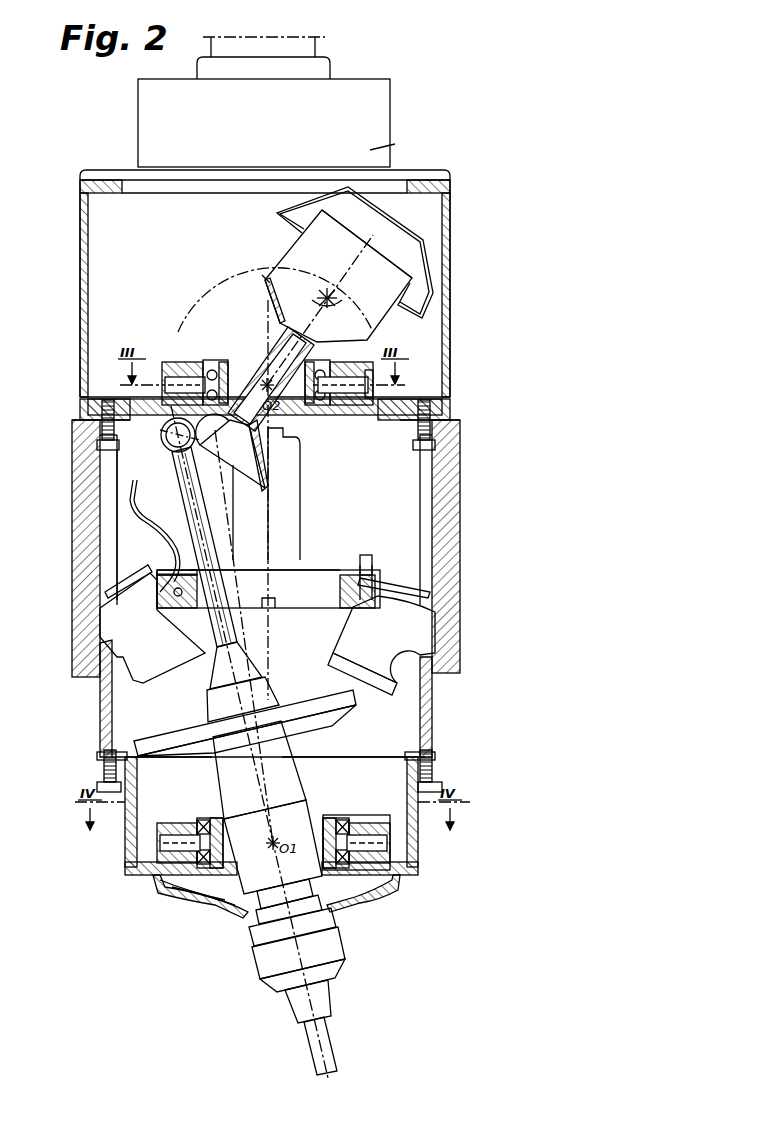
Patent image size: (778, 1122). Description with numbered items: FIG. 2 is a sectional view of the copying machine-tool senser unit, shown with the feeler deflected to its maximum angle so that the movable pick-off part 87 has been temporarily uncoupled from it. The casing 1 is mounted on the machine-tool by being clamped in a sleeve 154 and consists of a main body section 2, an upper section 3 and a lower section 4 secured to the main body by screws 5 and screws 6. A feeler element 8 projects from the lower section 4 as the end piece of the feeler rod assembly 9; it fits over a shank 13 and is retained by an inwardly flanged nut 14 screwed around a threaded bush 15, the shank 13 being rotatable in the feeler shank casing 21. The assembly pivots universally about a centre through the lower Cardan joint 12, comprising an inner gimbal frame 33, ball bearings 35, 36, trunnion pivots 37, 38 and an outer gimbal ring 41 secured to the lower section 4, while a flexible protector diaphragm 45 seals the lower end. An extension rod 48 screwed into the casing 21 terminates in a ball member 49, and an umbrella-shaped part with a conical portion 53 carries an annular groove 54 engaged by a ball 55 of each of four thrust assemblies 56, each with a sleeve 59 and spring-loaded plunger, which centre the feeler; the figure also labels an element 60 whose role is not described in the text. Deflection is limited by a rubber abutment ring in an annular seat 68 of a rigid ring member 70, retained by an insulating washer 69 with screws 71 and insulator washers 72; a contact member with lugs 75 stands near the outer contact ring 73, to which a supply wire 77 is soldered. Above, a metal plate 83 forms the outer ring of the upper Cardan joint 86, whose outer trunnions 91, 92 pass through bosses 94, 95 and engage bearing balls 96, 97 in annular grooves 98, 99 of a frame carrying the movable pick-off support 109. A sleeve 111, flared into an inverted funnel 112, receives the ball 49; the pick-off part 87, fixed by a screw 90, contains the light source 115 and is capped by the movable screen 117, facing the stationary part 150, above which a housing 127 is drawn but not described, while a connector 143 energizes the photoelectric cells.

The casing 1 is at (455, 383).
The main body section 2 is at (440, 706).
The upper section 3 is at (450, 272).
The lower section 4 is at (125, 830).
The screws 5 is at (97, 445).
The screws 6 is at (100, 782).
The feeler element 8 is at (325, 1045).
The feeler rod assembly 9 is at (292, 745).
The lower universal mounting or Cardan joint 12 is at (338, 812).
The shank 13 is at (320, 906).
The inwardly flanged nut 14 is at (268, 960).
The externally threaded bush 15 is at (252, 937).
The feeler shank casing 21 is at (290, 783).
The inner gimbal frame 33 is at (205, 898).
The ball bearing 35 is at (190, 895).
The ball bearing 36 is at (380, 812).
The trunnion pivot 37 is at (165, 845).
The trunnion pivot 38 is at (372, 898).
The outer gimbal frame or ring 41 is at (170, 823).
The flexible protector diaphragm 45 is at (212, 915).
The extension rod 48 is at (255, 628).
The ball member 49 is at (172, 445).
The conical portion 53 is at (350, 688).
The annular groove 54 is at (150, 728).
The ball 55 is at (200, 690).
The thrust assemblies 56 is at (135, 635).
The sleeve 59 is at (125, 685).
The wall 60 is at (108, 530).
The annular seat 68 is at (180, 595).
The washer 69 is at (380, 590).
The rigid ring member 70 is at (360, 600).
The screws 71 is at (362, 565).
The insulator washers 72 is at (375, 565).
The outer contact ring 73 is at (372, 565).
The lugs 75 is at (180, 597).
The supply wire 77 is at (130, 498).
The metal plate 83 is at (95, 408).
The upper Cardan joint 86 is at (372, 402).
The pick-off part 87 is at (252, 262).
The screw 90 is at (272, 340).
The outer trunnion 91 is at (175, 372).
The outer trunnion 92 is at (345, 405).
The boss 94 is at (182, 375).
The boss 95 is at (355, 370).
The bearing balls 96 is at (212, 370).
The bearing balls 97 is at (312, 405).
The annular groove 98 is at (225, 370).
The annular groove 99 is at (325, 405).
The movable pick-off support 109 is at (270, 360).
The sleeve 111 is at (285, 340).
The inverted funnel 112 is at (256, 478).
The light source 115 is at (335, 298).
The movable screen 117 is at (420, 245).
The motor 127 is at (372, 107).
The connector 143 is at (315, 45).
The stationary part 150 is at (405, 141).
The sleeve 154 is at (440, 653).